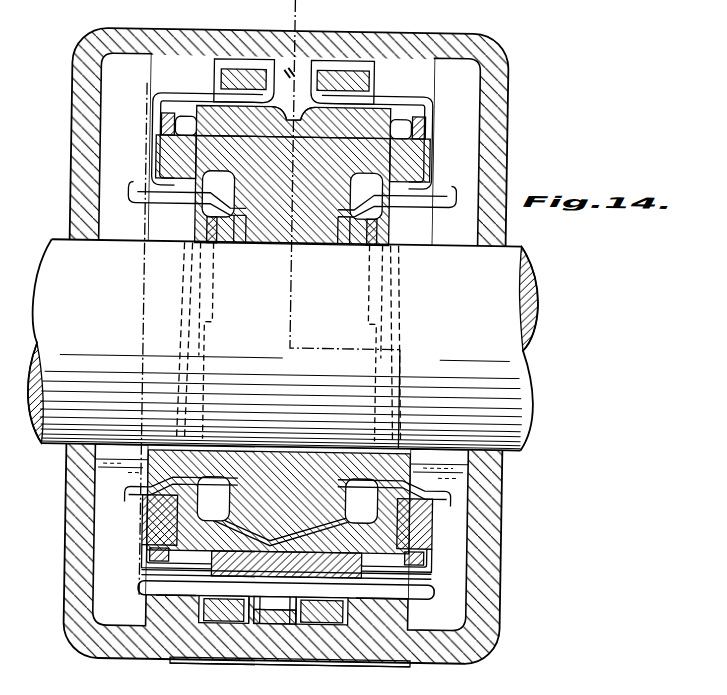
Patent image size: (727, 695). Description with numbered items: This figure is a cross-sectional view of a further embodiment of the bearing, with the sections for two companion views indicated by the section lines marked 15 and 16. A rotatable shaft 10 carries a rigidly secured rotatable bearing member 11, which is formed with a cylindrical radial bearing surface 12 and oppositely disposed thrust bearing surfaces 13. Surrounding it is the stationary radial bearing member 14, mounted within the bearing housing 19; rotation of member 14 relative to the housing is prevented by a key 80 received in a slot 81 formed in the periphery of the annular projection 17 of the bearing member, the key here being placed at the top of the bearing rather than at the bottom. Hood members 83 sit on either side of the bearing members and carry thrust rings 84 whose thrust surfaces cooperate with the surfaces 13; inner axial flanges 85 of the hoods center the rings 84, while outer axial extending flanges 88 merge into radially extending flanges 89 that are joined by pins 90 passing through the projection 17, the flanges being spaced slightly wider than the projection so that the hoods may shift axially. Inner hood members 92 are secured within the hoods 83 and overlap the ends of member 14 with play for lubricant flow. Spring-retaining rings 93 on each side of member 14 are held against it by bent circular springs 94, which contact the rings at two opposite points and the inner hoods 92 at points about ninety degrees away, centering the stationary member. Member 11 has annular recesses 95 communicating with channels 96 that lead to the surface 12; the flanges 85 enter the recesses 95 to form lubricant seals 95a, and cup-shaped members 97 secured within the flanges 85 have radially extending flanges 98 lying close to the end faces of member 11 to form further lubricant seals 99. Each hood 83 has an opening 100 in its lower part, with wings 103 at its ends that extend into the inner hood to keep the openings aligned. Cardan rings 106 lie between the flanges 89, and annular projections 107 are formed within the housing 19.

The rotatable shaft 10 is at (516, 250).
The rotatable bearing member 11 is at (310, 240).
The cylindrical radial bearing surface 12 is at (325, 138).
The thrust bearing surfaces 13 is at (156, 162).
The stationary radial bearing member 14 is at (273, 125).
The section line 15 is at (306, 52).
The section line 16 is at (152, 91).
The annular projection 17 is at (300, 85).
The bearing housing 19 is at (502, 124).
The key 80 is at (284, 72).
The slot 81 is at (289, 679).
The hood members 83 is at (150, 532).
The thrust rings 84 is at (147, 518).
The inner axial flanges 85 is at (170, 205).
The outer axial extending flanges 88 is at (187, 597).
The radially extending flanges 89 is at (255, 618).
The pins 90 is at (279, 626).
The inner hood members 92 is at (182, 580).
The spring-retaining rings 93 is at (174, 134).
The circular springs 94 is at (160, 126).
The annular recesses 95 is at (228, 224).
The lubricant seals 95a is at (220, 230).
The channels 96 is at (306, 530).
The cup-shaped members 97 is at (147, 200).
The radially extending flanges 98 is at (194, 228).
The lubricant seals 99 is at (254, 470).
The opening 100 is at (150, 556).
The wings 103 is at (150, 572).
The cardan rings 106 is at (222, 612).
The annular projections 107 is at (197, 92).